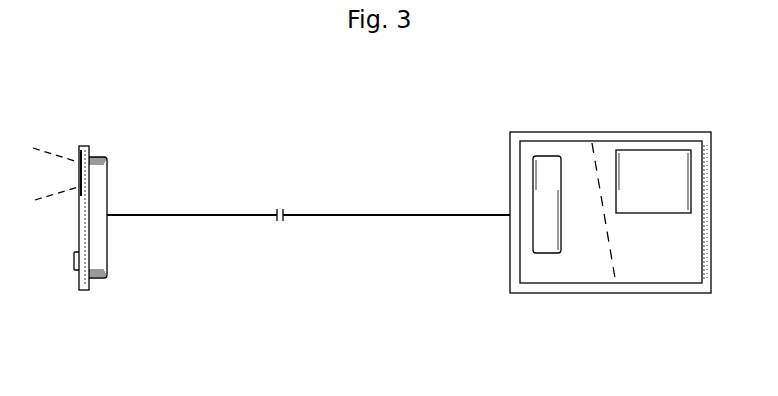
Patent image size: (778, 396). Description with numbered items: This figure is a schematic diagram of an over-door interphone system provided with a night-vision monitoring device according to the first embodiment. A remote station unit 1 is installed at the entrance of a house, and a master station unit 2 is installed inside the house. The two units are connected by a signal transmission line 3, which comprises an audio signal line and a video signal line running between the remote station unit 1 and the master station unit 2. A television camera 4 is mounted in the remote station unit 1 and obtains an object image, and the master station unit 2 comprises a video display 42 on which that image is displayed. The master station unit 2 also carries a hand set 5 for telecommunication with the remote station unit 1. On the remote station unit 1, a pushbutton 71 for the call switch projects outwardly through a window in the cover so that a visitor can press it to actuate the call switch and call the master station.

The remote station unit 1 is at (109, 158).
The master station unit 2 is at (585, 140).
The signal transmission line 3 is at (350, 217).
The television camera 4 is at (57, 146).
The hand set 5 is at (543, 242).
The video display 42 is at (671, 175).
The pushbutton 71 is at (74, 262).